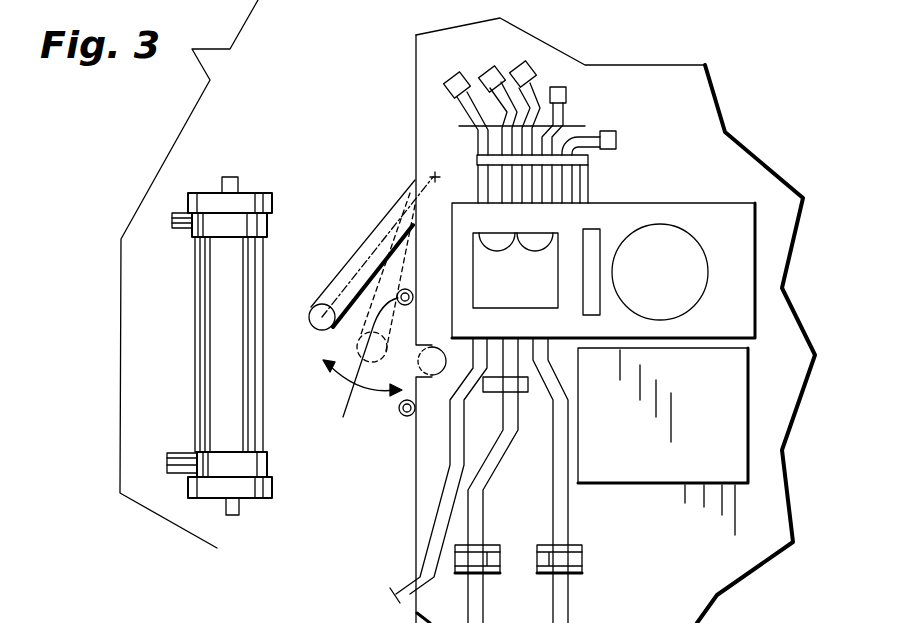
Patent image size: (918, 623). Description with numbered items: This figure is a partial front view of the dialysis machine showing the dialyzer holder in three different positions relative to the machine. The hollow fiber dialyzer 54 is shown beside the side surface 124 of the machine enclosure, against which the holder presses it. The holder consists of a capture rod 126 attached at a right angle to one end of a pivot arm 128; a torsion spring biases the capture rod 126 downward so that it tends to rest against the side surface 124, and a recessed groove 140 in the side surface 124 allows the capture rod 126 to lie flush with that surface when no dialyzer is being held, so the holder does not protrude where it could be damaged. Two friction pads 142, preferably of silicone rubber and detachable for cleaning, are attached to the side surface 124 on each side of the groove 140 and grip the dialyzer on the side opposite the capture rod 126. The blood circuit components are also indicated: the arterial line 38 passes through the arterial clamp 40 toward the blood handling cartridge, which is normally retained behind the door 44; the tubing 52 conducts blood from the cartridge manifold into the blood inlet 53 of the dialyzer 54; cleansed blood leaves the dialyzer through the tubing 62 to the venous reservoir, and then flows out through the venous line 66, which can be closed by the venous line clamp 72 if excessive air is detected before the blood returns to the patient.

The side surface 124 is at (415, 72).
The tubing 52 is at (467, 106).
The blood inlet 53 is at (126, 622).
The hollow fiber dialyzer 54 is at (284, 230).
The pivot arm 128 is at (362, 240).
The capture rod 126 is at (320, 328).
The friction pads 142 is at (399, 410).
The recessed groove 140 is at (428, 350).
The door 44 is at (730, 247).
The venous line 66 is at (483, 506).
The tubing 62 is at (406, 582).
The venous line clamp 72 is at (498, 556).
The arterial line 38 is at (568, 513).
The arterial clamp 40 is at (583, 556).